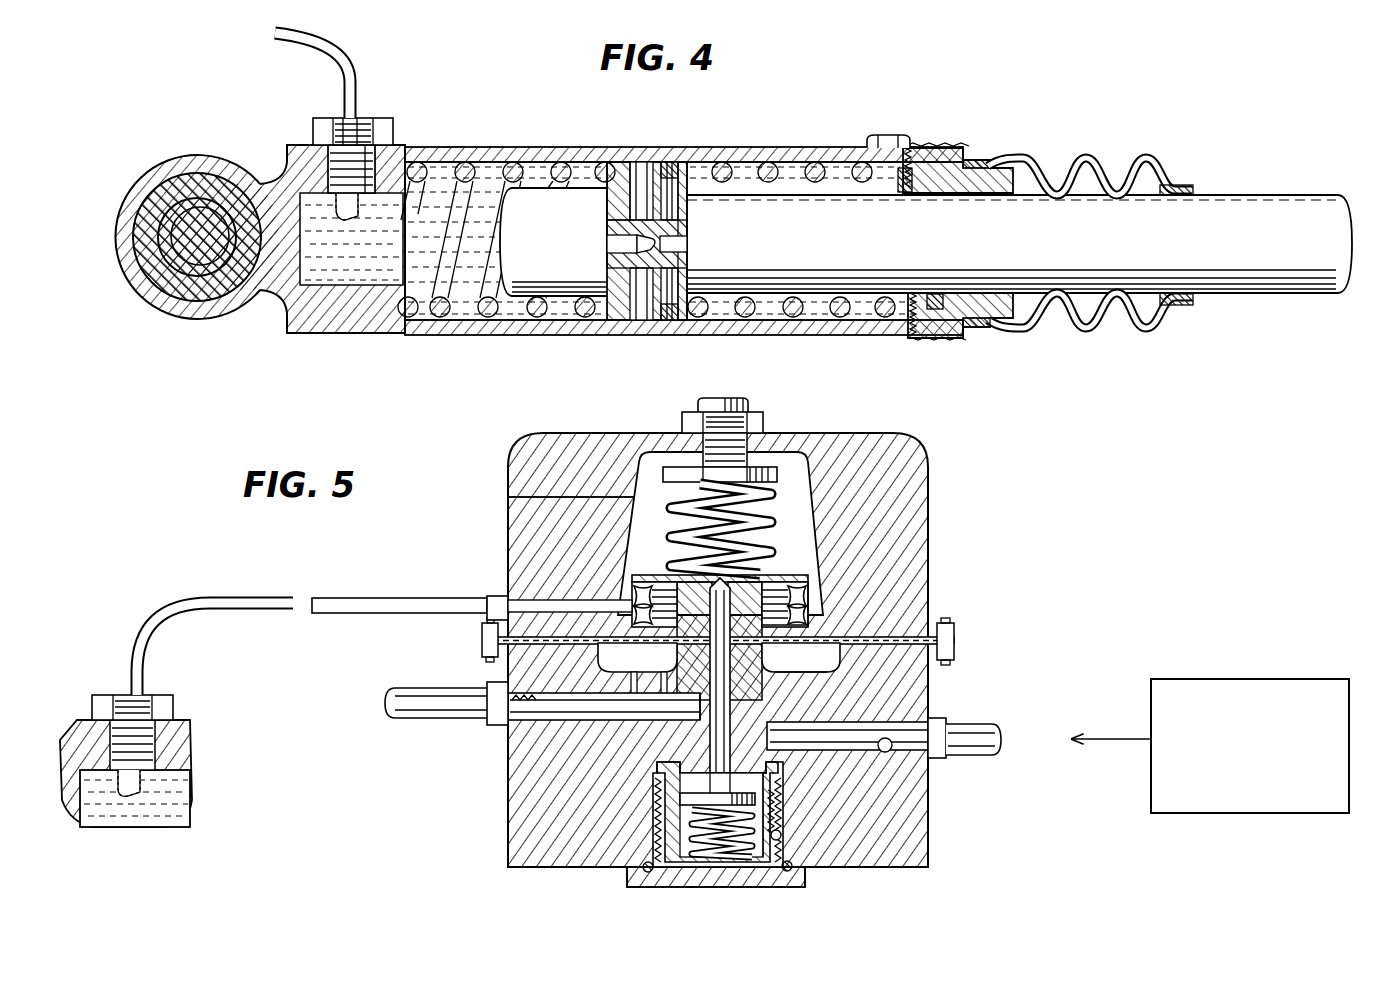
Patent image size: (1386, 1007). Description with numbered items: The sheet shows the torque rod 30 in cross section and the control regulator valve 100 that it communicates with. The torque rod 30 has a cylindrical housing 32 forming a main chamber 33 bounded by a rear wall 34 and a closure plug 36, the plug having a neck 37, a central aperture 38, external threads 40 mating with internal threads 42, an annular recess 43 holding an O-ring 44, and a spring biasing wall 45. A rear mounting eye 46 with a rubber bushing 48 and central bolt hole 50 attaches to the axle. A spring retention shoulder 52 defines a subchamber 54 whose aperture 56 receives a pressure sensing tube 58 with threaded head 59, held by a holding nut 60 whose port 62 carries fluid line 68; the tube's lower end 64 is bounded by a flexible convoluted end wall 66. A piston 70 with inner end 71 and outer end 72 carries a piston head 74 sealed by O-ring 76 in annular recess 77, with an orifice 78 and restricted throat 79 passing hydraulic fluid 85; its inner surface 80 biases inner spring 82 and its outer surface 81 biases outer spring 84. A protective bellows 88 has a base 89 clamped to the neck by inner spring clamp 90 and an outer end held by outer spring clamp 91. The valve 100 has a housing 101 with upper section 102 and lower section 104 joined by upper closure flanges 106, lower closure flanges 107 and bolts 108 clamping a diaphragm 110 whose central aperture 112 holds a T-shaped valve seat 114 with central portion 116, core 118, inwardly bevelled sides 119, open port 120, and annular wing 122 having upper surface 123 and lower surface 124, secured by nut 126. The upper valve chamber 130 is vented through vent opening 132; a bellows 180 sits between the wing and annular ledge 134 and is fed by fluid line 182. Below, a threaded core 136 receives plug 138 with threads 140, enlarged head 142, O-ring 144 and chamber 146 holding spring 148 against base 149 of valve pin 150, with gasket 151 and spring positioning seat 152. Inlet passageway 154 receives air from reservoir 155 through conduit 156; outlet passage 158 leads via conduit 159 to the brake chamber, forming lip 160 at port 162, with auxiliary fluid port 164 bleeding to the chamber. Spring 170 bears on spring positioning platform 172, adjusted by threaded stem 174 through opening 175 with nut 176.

In FIG. 4, the torque rod 30 is at (1003, 122).
In FIG. 4, the housing 32 is at (858, 336).
In FIG. 4, the main chamber 33 is at (766, 312).
In FIG. 4, the rear wall 34 is at (272, 313).
In FIG. 4, the closure plug 36 is at (1020, 325).
In FIG. 4, the neck 37 is at (976, 330).
In FIG. 4, the central aperture 38 is at (1000, 195).
In FIG. 4, the external threads 40 is at (948, 330).
In FIG. 4, the internal threads 42 is at (920, 337).
In FIG. 4, the annular recess 43 is at (908, 180).
In FIG. 4, the O-ring 44 is at (936, 298).
In FIG. 4, the spring biasing wall 45 is at (900, 147).
In FIG. 4, the rear mounting eye 46 is at (135, 272).
In FIG. 4, the rubber bushing 48 is at (172, 298).
In FIG. 4, the central bolt hole 50 is at (185, 222).
In FIG. 4, the spring retention shoulder 52 is at (422, 300).
In FIG. 4, the subchamber 54 is at (345, 300).
In FIG. 4, the aperture 56 is at (380, 150).
In FIG. 5, the aperture 56 is at (177, 735).
In FIG. 4, the pressure sensing tube 58 is at (335, 160).
In FIG. 5, the pressure sensing tube 58 is at (160, 762).
In FIG. 4, the threaded head 59 is at (335, 175).
In FIG. 4, the holding nut 60 is at (395, 125).
In FIG. 5, the holding nut 60 is at (102, 698).
In FIG. 4, the port 62 is at (357, 118).
In FIG. 4, the lower end 64 is at (355, 215).
In FIG. 5, the lower end 64 is at (187, 790).
In FIG. 4, the convoluted end wall 66 is at (343, 225).
In FIG. 5, the convoluted end wall 66 is at (126, 800).
In FIG. 4, the fluid line 68 is at (333, 60).
In FIG. 5, the fluid line 68 is at (200, 603).
In FIG. 4, the piston 70 is at (862, 227).
In FIG. 4, the inner end 71 is at (493, 210).
In FIG. 4, the outer end 72 is at (1272, 195).
In FIG. 4, the piston head 74 is at (625, 175).
In FIG. 4, the O-ring 76 is at (672, 172).
In FIG. 4, the annular recess 77 is at (670, 322).
In FIG. 4, the orifice 78 is at (608, 240).
In FIG. 4, the restricted throat 79 is at (665, 234).
In FIG. 4, the inner surface 80 is at (606, 200).
In FIG. 4, the outer surface 81 is at (716, 168).
In FIG. 4, the inner spring 82 is at (498, 312).
In FIG. 4, the outer spring 84 is at (792, 300).
In FIG. 4, the hydraulic fluid 85 is at (468, 292).
In FIG. 5, the hydraulic fluid 85 is at (172, 815).
In FIG. 4, the protective bellows 88 is at (1098, 160).
In FIG. 4, the base 89 is at (985, 163).
In FIG. 4, the inner spring clamp 90 is at (988, 328).
In FIG. 4, the outer spring clamp 91 is at (1176, 306).
In FIG. 5, the control regulator valve 100 is at (962, 585).
In FIG. 5, the housing 101 is at (930, 518).
In FIG. 5, the upper section 102 is at (930, 548).
In FIG. 5, the lower section 104 is at (930, 822).
In FIG. 5, the upper closure flanges 106 is at (481, 638).
In FIG. 5, the lower closure flanges 107 is at (482, 650).
In FIG. 5, the bolts 108 is at (486, 630).
In FIG. 5, the diaphragm 110 is at (862, 638).
In FIG. 5, the central aperture 112 is at (733, 650).
In FIG. 5, the T-shaped valve seat 114 is at (640, 600).
In FIG. 5, the central portion 116 is at (801, 657).
In FIG. 5, the core 118 is at (700, 650).
In FIG. 5, the inwardly bevelled sides 119 is at (770, 582).
In FIG. 5, the open port 120 is at (702, 576).
In FIG. 5, the annular wing 122 is at (812, 584).
In FIG. 5, the upper surface 123 is at (640, 582).
In FIG. 5, the lower surface 124 is at (637, 668).
In FIG. 5, the nut 126 is at (790, 722).
In FIG. 5, the upper valve chamber 130 is at (808, 497).
In FIG. 5, the vent opening 132 is at (520, 495).
In FIG. 5, the annular ledge 134 is at (822, 650).
In FIG. 5, the threaded core 136 is at (792, 845).
In FIG. 5, the plug 138 is at (810, 880).
In FIG. 5, the threads 140 is at (792, 820).
In FIG. 5, the enlarged head 142 is at (805, 880).
In FIG. 5, the O-ring 144 is at (786, 830).
In FIG. 5, the chamber 146 is at (626, 870).
In FIG. 5, the spring 148 is at (662, 830).
In FIG. 5, the base 149 is at (740, 808).
In FIG. 5, the valve pin 150 is at (700, 757).
In FIG. 5, the gasket 151 is at (778, 790).
In FIG. 5, the spring positioning seat 152 is at (720, 822).
In FIG. 5, the fluid inlet passageway 154 is at (890, 752).
In FIG. 5, the fluid reservoir 155 is at (1215, 680).
In FIG. 5, the conduit 156 is at (990, 722).
In FIG. 5, the fluid outlet passage 158 is at (500, 735).
In FIG. 5, the conduit 159 is at (395, 690).
In FIG. 5, the lip 160 is at (665, 780).
In FIG. 5, the port 162 is at (708, 720).
In FIG. 5, the auxiliary fluid port 164 is at (604, 706).
In FIG. 5, the spring 170 is at (692, 512).
In FIG. 5, the spring positioning platform 172 is at (777, 474).
In FIG. 5, the threaded stem 174 is at (750, 408).
In FIG. 5, the opening 175 is at (690, 452).
In FIG. 5, the nut 176 is at (690, 420).
In FIG. 5, the bellows 180 is at (822, 606).
In FIG. 5, the fluid line 182 is at (495, 597).